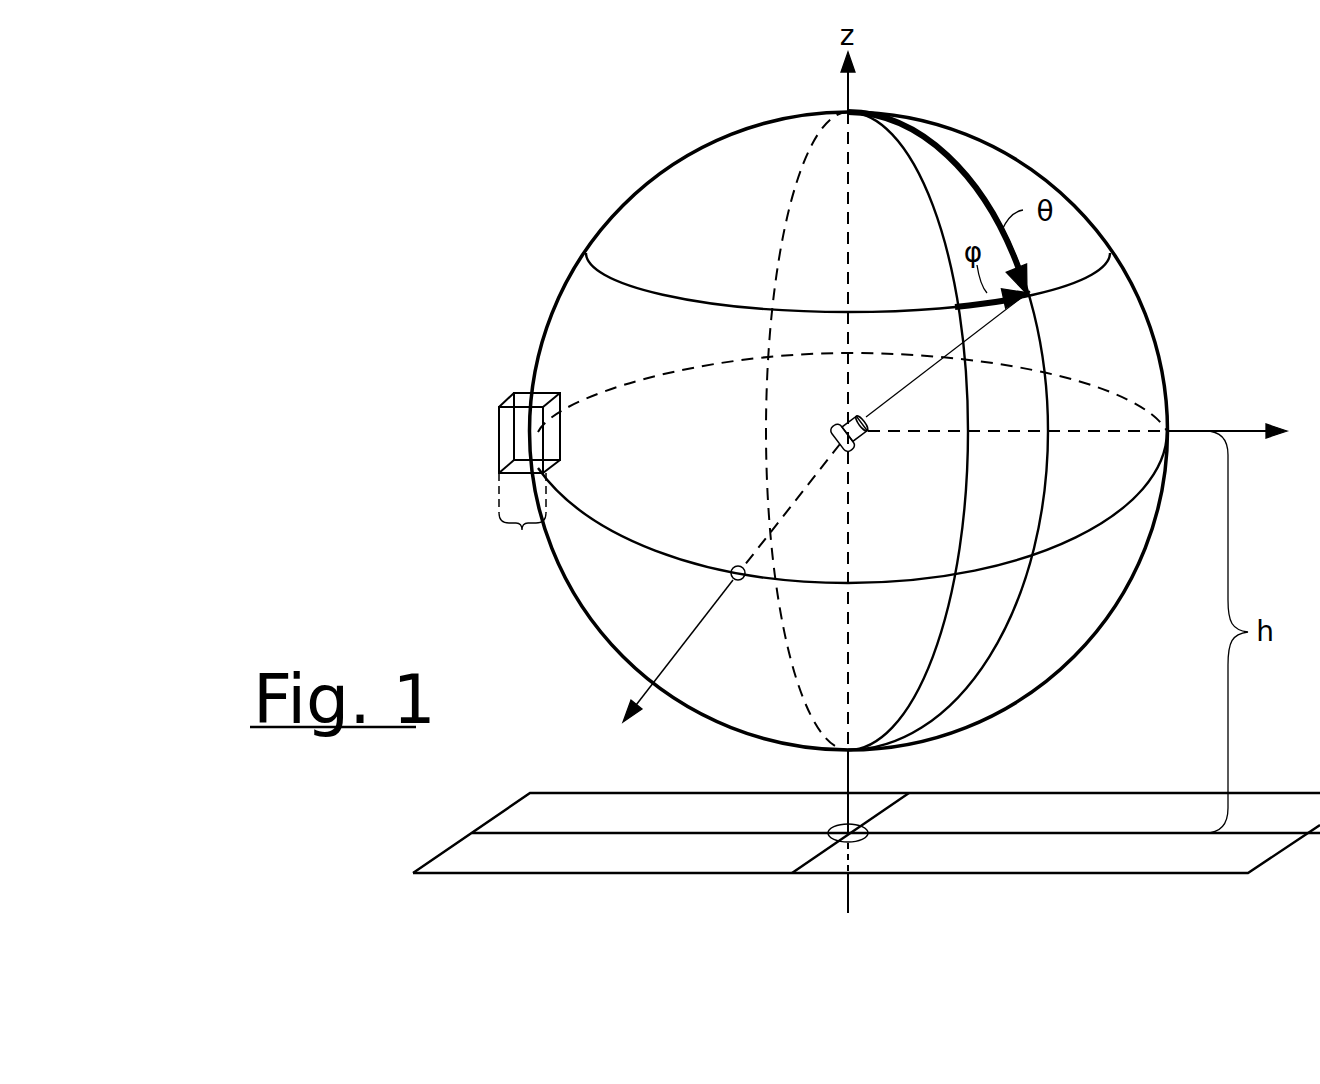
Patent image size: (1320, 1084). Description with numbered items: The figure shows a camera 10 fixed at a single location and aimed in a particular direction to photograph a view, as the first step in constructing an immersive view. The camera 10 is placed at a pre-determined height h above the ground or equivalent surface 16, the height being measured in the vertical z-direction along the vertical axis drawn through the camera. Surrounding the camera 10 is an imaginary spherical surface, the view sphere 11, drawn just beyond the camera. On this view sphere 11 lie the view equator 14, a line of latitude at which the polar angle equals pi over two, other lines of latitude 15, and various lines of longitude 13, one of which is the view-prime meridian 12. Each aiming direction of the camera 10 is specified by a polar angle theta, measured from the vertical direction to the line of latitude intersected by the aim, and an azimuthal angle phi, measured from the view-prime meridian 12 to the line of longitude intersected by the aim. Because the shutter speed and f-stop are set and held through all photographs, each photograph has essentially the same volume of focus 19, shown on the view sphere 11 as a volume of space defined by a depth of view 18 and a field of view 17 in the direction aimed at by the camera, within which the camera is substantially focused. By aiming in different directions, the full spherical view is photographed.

The camera 10 is at (855, 441).
The view sphere 11 is at (1140, 297).
The view-prime meridian 12 is at (973, 398).
The lines of longitude 13 is at (1040, 347).
The view equator 14 is at (578, 508).
The lines of latitude 15 is at (655, 288).
The ground or equivalent surface 16 is at (973, 813).
The field of view 17 is at (548, 435).
The depth of view 18 is at (522, 531).
The volume of focus 19 is at (486, 422).